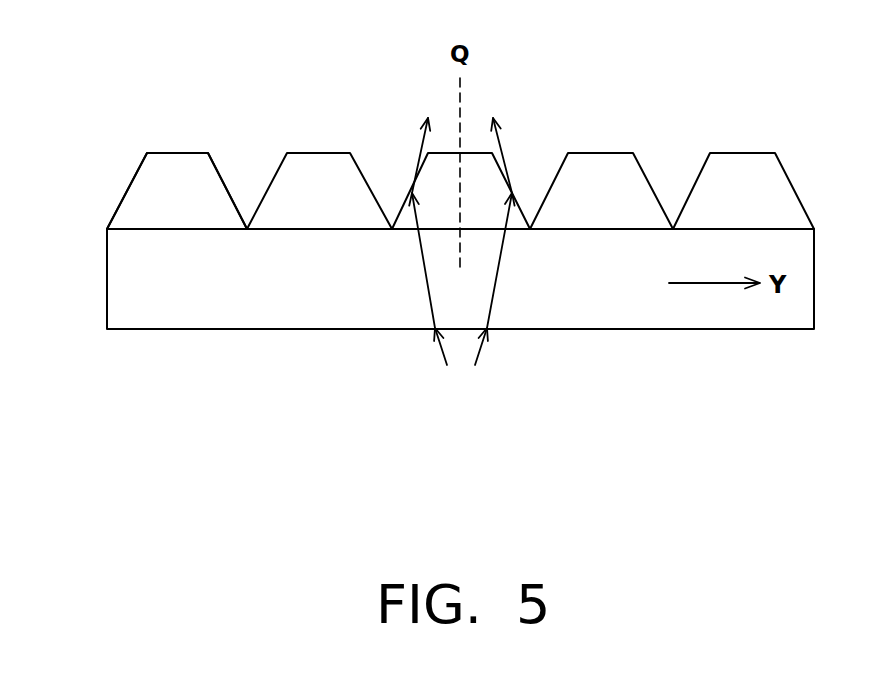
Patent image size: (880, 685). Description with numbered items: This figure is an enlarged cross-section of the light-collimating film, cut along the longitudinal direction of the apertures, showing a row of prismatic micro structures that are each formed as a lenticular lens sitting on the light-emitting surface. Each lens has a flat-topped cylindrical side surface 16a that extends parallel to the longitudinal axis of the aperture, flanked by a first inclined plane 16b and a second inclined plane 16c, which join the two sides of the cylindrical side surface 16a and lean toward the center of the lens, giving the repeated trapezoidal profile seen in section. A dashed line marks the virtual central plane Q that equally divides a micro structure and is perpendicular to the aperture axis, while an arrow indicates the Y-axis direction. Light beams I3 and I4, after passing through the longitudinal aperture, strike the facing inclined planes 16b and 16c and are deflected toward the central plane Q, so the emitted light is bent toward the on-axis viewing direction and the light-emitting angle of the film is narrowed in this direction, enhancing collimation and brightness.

The cylindrical side surface 16a is at (175, 153).
The first inclined plane 16b is at (125, 188).
The second inclined plane 16c is at (232, 190).
The light beam I3 is at (495, 258).
The light beam I4 is at (430, 258).